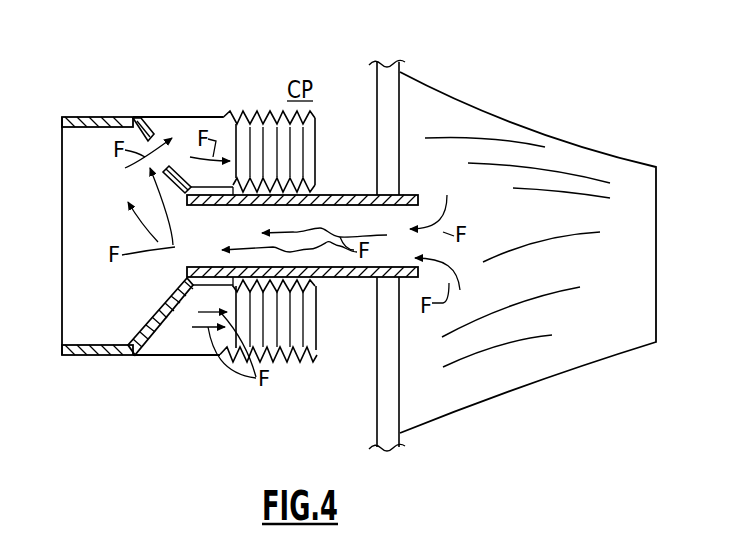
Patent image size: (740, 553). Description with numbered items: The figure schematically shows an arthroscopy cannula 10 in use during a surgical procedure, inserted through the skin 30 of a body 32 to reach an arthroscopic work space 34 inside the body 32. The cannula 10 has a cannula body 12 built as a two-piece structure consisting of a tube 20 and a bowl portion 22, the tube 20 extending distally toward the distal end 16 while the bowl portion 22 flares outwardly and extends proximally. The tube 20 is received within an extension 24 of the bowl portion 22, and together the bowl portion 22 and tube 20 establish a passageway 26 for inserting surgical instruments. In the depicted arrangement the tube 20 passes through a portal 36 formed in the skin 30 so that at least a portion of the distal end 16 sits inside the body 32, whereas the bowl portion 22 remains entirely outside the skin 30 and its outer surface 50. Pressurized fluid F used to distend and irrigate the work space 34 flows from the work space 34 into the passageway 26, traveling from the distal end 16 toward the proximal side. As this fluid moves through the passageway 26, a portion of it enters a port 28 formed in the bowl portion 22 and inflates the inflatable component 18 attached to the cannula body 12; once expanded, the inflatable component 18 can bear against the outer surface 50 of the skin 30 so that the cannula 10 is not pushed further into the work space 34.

The arthroscopy cannula 10 is at (176, 101).
The cannula body 12 is at (128, 360).
The distal end 16 is at (416, 186).
The inflatable component 18 is at (230, 112).
The tube 20 is at (345, 270).
The bowl portion 22 is at (90, 355).
The extension 24 is at (202, 290).
The passageway 26 is at (328, 222).
The port 28 is at (152, 137).
The skin 30 is at (387, 70).
The body 32 is at (436, 88).
The arthroscopic work space 34 is at (523, 221).
The portal 36 is at (387, 194).
The outer surface 50 is at (377, 417).